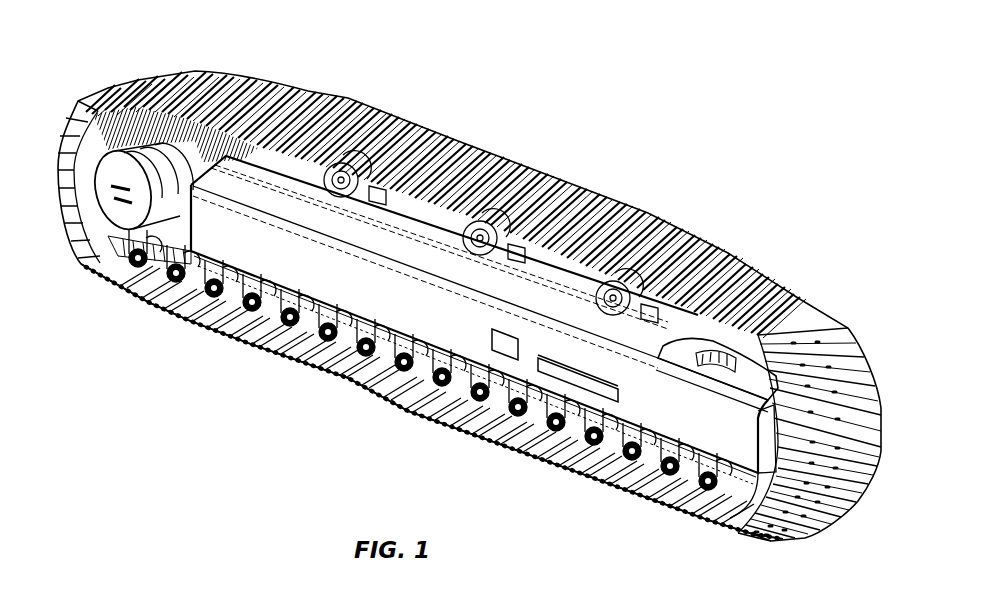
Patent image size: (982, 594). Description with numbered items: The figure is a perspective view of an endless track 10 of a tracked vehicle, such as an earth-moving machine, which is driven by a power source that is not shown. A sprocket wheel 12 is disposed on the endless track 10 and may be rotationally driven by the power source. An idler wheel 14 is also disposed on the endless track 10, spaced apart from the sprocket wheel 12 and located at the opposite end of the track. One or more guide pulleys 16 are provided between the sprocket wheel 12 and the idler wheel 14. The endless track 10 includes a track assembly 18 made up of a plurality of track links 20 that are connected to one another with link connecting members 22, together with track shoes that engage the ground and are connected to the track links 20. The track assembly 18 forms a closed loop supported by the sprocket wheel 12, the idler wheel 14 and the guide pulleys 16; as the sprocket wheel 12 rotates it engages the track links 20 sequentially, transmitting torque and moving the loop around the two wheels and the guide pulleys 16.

The endless track 10 is at (490, 101).
The sprocket wheel 12 is at (123, 258).
The idler wheel 14 is at (618, 477).
The guide pulley 16 is at (163, 303).
The track assembly 18 is at (554, 172).
The track link 20 is at (360, 378).
The link connecting member 22 is at (340, 372).